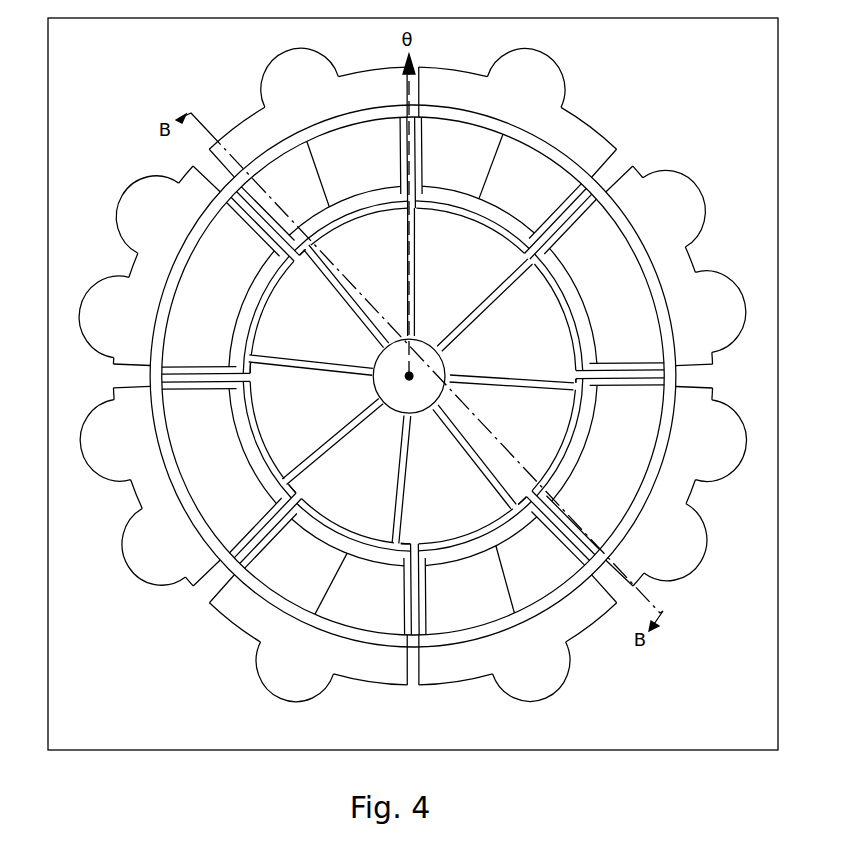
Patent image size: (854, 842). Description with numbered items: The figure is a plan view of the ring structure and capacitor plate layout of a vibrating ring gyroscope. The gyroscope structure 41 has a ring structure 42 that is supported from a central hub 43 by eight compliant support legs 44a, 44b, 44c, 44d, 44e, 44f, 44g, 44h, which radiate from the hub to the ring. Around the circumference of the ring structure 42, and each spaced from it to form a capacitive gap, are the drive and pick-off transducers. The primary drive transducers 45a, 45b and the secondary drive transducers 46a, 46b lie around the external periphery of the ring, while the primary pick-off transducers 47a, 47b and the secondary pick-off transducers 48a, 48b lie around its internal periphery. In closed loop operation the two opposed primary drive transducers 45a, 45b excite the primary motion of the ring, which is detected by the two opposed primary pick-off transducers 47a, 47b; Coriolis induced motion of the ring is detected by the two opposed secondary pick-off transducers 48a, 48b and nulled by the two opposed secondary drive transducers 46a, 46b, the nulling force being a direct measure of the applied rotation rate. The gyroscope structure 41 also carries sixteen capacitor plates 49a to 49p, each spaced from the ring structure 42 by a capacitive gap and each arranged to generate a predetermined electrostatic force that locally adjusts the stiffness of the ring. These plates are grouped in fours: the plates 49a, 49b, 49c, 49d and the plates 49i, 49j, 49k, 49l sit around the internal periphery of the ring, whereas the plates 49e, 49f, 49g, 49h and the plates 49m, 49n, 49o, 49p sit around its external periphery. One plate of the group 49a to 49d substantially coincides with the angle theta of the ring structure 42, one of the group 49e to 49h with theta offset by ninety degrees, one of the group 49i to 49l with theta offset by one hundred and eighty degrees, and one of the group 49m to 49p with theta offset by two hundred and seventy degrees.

The gyroscope structure 41 is at (682, 102).
The ring structure 42 is at (195, 595).
The central hub 43 is at (409, 376).
The compliant support leg 44a is at (318, 272).
The compliant support leg 44b is at (404, 236).
The compliant support leg 44c is at (510, 297).
The compliant support leg 44d is at (527, 385).
The compliant support leg 44e is at (468, 460).
The compliant support leg 44f is at (395, 450).
The compliant support leg 44g is at (353, 424).
The compliant support leg 44h is at (340, 362).
The primary drive transducer 45a is at (299, 78).
The primary drive transducer 45b is at (531, 672).
The secondary drive transducer 46a is at (526, 78).
The secondary drive transducer 46b is at (295, 671).
The primary pick-off transducer 47a is at (577, 273).
The primary pick-off transducer 47b is at (249, 478).
The secondary pick-off transducer 48a is at (608, 432).
The secondary pick-off transducer 48b is at (218, 320).
The capacitor plate 49a is at (313, 217).
The capacitor plate 49b is at (338, 174).
The capacitor plate 49c is at (467, 175).
The capacitor plate 49d is at (507, 166).
The capacitor plate 49e is at (674, 208).
The capacitor plate 49f is at (716, 311).
The capacitor plate 49g is at (718, 440).
The capacitor plate 49h is at (675, 542).
The capacitor plate 49i is at (512, 534).
The capacitor plate 49j is at (485, 580).
The capacitor plate 49k is at (359, 577).
The capacitor plate 49l is at (315, 583).
The capacitor plate 49m is at (154, 546).
The capacitor plate 49n is at (110, 440).
The capacitor plate 49o is at (106, 317).
The capacitor plate 49p is at (147, 215).